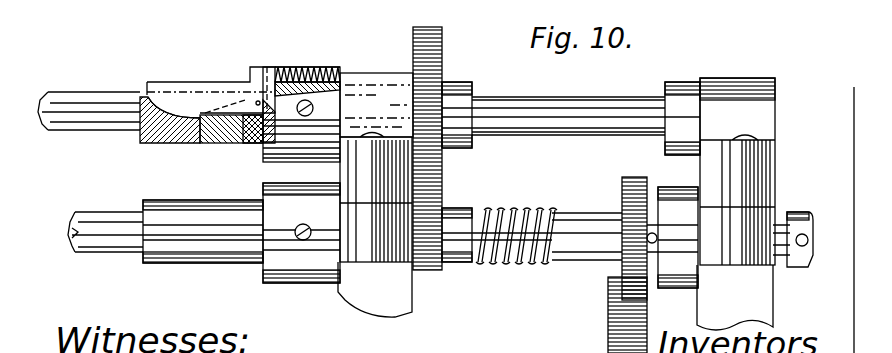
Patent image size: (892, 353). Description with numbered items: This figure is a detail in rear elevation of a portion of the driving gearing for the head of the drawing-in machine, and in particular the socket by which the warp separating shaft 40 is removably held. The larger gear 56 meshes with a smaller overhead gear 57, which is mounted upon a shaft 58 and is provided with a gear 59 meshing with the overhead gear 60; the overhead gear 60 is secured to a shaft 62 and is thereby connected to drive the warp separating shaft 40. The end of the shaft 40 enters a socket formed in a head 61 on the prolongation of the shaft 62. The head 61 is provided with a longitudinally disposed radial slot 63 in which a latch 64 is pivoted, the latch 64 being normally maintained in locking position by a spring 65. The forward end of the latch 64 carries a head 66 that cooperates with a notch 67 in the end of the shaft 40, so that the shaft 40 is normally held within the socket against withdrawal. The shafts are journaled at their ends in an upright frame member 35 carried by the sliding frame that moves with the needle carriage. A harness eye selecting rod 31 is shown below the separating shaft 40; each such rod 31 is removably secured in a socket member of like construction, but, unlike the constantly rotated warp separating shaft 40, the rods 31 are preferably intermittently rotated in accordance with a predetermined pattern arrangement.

The warp separating shaft 40 is at (118, 95).
The radial slot 63 is at (158, 104).
The latch 64 is at (203, 92).
The spring 65 is at (308, 72).
The head of the latch 66 is at (166, 142).
The notch 67 is at (202, 141).
The head 61 is at (247, 138).
The overhead gear 60 is at (443, 53).
The shaft 62 is at (507, 105).
The gear 59 is at (437, 205).
The smaller overhead gear 57 is at (623, 193).
The shaft 58 is at (567, 242).
The larger gear 56 is at (608, 330).
The upright frame member 35 is at (403, 292).
The harness eye selecting rods 31 is at (123, 232).